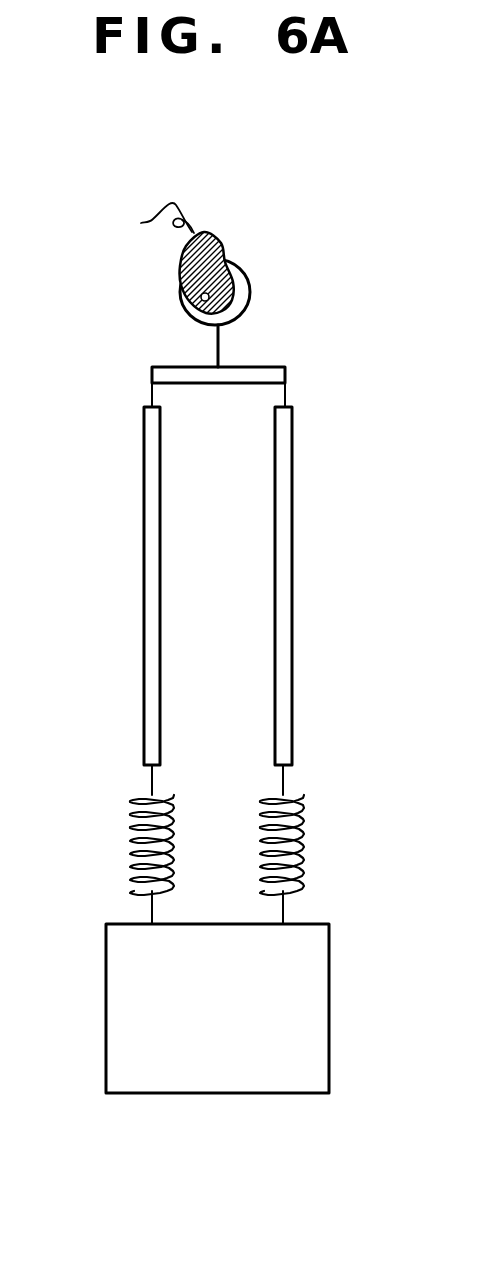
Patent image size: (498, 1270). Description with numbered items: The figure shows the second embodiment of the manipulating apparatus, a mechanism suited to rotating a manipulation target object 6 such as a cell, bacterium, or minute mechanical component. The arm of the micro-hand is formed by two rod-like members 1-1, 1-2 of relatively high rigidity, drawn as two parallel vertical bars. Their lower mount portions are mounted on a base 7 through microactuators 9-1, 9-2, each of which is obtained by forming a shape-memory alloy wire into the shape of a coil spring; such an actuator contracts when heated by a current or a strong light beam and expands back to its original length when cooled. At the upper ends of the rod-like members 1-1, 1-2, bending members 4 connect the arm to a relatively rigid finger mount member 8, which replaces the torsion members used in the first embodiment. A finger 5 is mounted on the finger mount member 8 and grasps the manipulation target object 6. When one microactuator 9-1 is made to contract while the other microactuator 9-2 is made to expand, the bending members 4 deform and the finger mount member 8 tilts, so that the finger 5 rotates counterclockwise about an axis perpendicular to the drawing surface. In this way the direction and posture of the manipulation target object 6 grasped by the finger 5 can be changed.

The rod-like member 1-1 is at (143, 638).
The rod-like member 1-2 is at (293, 560).
The bending member 4 is at (150, 402).
The finger 5 is at (248, 270).
The manipulation target object 6 is at (222, 233).
The base 7 is at (105, 1010).
The finger mount member 8 is at (252, 366).
The microactuator 9-1 is at (130, 850).
The microactuator 9-2 is at (305, 850).